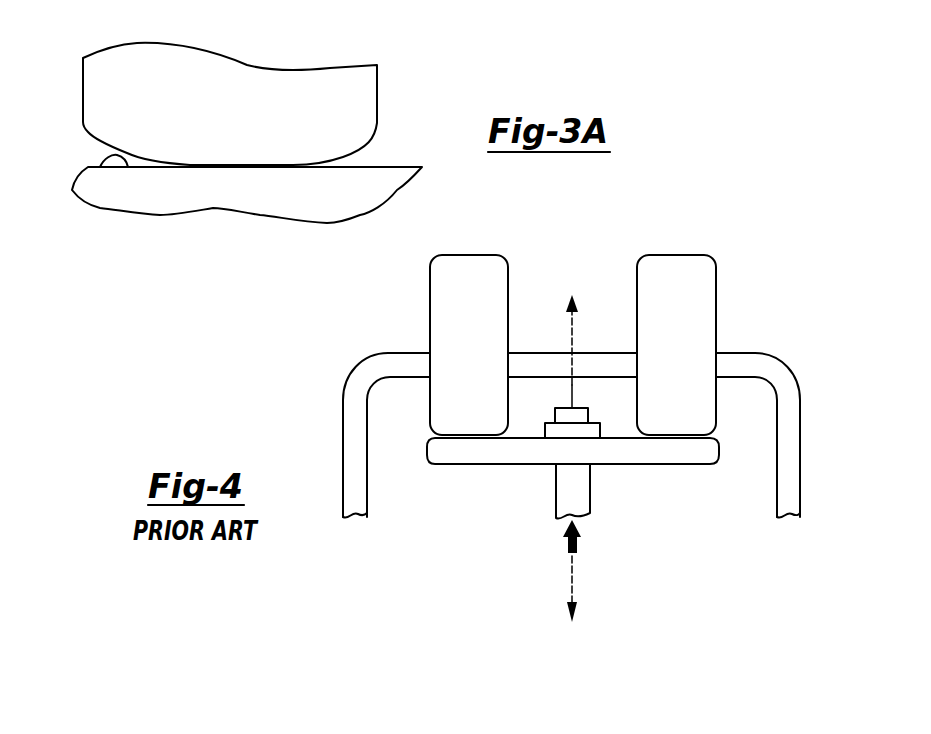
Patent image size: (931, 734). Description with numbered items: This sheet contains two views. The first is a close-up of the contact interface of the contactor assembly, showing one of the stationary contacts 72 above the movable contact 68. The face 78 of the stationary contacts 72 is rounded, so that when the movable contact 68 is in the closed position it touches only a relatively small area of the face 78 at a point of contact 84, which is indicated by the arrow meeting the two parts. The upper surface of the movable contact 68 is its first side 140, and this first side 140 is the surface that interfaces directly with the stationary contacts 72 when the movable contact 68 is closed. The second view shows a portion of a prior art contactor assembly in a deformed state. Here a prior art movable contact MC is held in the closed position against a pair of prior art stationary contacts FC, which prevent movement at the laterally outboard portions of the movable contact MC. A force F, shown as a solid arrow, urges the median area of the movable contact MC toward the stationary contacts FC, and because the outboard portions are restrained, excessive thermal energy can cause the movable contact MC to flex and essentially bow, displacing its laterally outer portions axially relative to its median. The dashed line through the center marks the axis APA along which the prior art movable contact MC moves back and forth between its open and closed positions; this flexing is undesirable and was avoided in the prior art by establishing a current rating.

In FIG. 3A, the stationary contacts 72 is at (360, 95).
In FIG. 3A, the movable contact 68 is at (163, 200).
In FIG. 3A, the first side 140 is at (107, 167).
In FIG. 3A, the face 78 is at (340, 153).
In FIG. 3A, the point of contact 84 is at (243, 180).
In FIG. 4, the prior art stationary contacts FC is at (717, 303).
In FIG. 4, the prior art movable contact MC is at (658, 464).
In FIG. 4, the force F is at (566, 544).
In FIG. 4, the axis APA is at (572, 577).